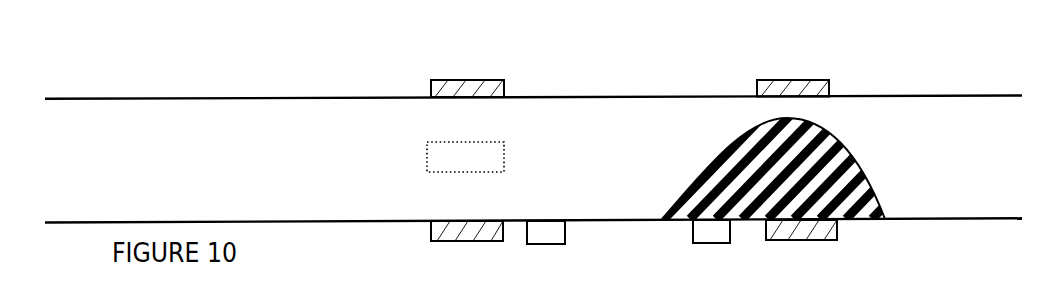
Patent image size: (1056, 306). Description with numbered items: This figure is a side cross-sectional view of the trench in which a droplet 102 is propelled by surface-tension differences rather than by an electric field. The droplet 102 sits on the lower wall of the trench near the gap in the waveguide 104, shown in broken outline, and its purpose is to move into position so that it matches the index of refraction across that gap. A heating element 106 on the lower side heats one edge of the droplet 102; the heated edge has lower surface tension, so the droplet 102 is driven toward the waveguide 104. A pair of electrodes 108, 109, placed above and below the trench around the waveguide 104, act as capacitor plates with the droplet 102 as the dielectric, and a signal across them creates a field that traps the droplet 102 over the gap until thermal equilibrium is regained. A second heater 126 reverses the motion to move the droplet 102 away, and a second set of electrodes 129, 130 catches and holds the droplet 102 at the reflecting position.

The droplet 102 is at (848, 160).
The waveguide 104 is at (497, 148).
The heating element 106 is at (725, 242).
The electrode 108 is at (486, 80).
The electrode 109 is at (452, 242).
The second heater 126 is at (560, 242).
The second electrode 129 is at (780, 243).
The second electrode 130 is at (808, 80).